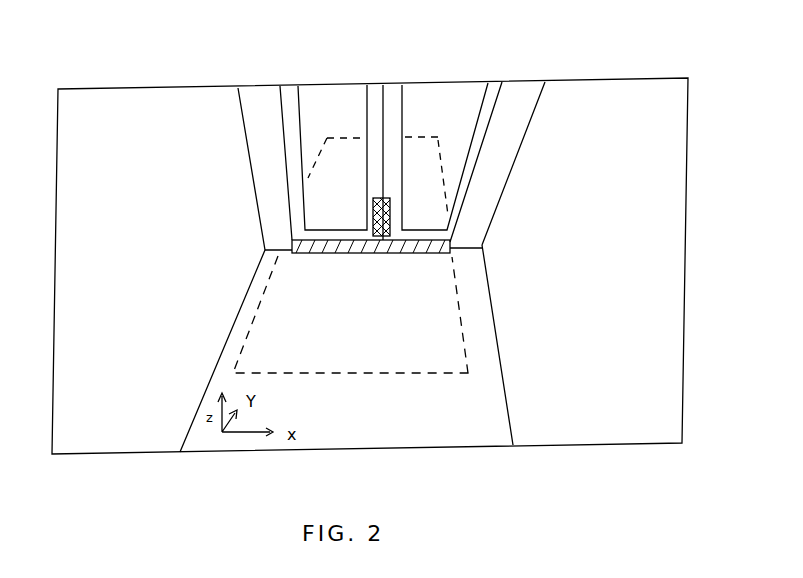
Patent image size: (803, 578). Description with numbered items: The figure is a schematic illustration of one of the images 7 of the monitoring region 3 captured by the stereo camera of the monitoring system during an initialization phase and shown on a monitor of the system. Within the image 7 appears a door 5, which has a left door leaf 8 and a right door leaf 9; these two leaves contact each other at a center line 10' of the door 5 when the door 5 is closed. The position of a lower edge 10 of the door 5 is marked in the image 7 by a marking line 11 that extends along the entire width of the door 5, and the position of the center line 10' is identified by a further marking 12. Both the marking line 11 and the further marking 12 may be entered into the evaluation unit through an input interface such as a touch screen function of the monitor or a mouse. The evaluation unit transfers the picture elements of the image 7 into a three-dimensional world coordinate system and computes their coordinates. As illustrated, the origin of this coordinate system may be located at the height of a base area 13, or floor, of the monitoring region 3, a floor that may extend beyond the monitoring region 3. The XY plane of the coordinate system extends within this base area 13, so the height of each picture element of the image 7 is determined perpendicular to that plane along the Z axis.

The monitoring region 3 is at (428, 290).
The door 5 is at (268, 115).
The image 7 is at (627, 78).
The left door leaf 8 is at (333, 110).
The right door leaf 9 is at (453, 117).
The lower edge 10 is at (416, 166).
The center line 10' is at (401, 135).
The marking line 11 is at (337, 253).
The further marking 12 is at (375, 211).
The base area 13 is at (463, 398).